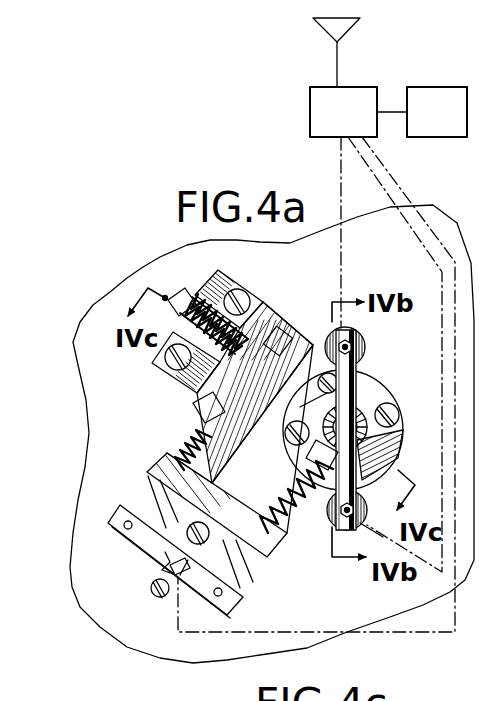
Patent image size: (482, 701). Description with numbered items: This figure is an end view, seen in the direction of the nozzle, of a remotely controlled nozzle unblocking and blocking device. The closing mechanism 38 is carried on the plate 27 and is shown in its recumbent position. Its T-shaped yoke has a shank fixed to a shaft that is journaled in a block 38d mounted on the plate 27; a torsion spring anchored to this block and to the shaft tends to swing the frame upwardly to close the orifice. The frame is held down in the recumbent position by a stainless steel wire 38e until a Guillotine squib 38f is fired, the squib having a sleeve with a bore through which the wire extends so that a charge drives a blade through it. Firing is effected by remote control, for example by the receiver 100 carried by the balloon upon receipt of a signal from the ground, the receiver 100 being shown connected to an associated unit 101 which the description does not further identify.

The receiver 100 is at (343, 77).
The control unit 101 is at (422, 112).
The plate 27 is at (405, 600).
The drive mechanism 38 is at (216, 475).
The block 38d is at (167, 371).
The stainless steel wire 38e is at (172, 588).
The Guillotine squib 38f is at (188, 553).